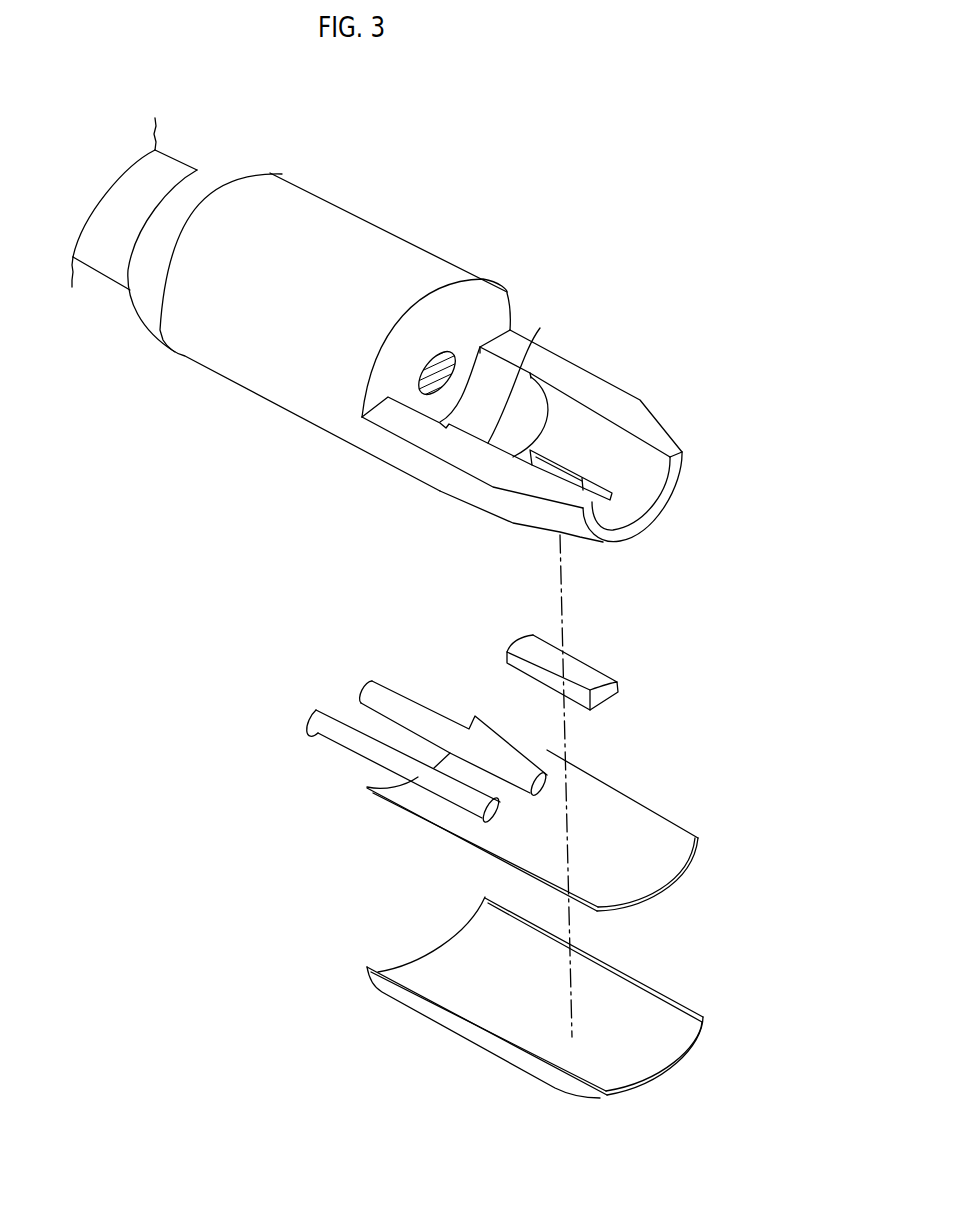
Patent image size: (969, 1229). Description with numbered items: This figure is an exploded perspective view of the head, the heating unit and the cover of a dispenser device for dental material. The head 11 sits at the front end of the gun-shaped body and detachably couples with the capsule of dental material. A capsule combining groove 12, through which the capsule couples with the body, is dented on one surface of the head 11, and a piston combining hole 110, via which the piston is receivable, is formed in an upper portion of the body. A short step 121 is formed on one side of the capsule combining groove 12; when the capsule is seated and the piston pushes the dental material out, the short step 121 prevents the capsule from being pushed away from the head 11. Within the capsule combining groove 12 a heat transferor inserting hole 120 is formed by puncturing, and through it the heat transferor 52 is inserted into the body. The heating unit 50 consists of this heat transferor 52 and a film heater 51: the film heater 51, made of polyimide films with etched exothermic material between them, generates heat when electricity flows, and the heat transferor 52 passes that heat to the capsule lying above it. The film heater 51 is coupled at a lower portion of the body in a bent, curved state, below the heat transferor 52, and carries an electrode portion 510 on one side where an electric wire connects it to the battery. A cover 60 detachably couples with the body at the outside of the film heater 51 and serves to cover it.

The head 11 is at (350, 240).
The piston combining hole 110 is at (440, 358).
The capsule combining groove 12 is at (590, 437).
The short step 121 is at (527, 341).
The heat transferor inserting hole 120 is at (593, 478).
The heating unit 50 is at (755, 625).
The heat transferor 52 is at (590, 680).
The electrode portion 510 is at (327, 725).
The film heater 51 is at (638, 833).
The cover 60 is at (667, 1015).